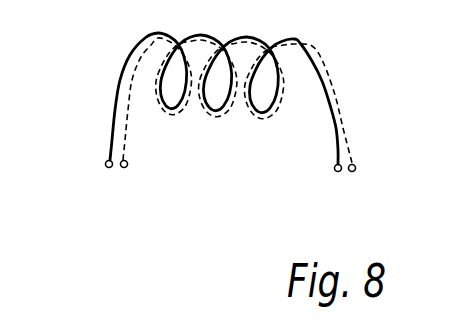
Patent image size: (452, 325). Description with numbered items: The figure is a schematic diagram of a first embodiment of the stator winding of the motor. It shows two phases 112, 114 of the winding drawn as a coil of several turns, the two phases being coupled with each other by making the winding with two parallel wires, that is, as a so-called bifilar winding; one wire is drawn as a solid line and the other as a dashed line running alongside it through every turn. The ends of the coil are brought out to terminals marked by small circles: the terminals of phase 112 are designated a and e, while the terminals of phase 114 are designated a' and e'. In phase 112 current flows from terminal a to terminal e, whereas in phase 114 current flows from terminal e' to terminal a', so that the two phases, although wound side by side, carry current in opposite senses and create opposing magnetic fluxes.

The phase 112 is at (115, 92).
The phase 114 is at (125, 128).
The terminal a is at (81, 180).
The terminal a' is at (142, 187).
The terminal e is at (321, 191).
The terminal e' is at (374, 185).